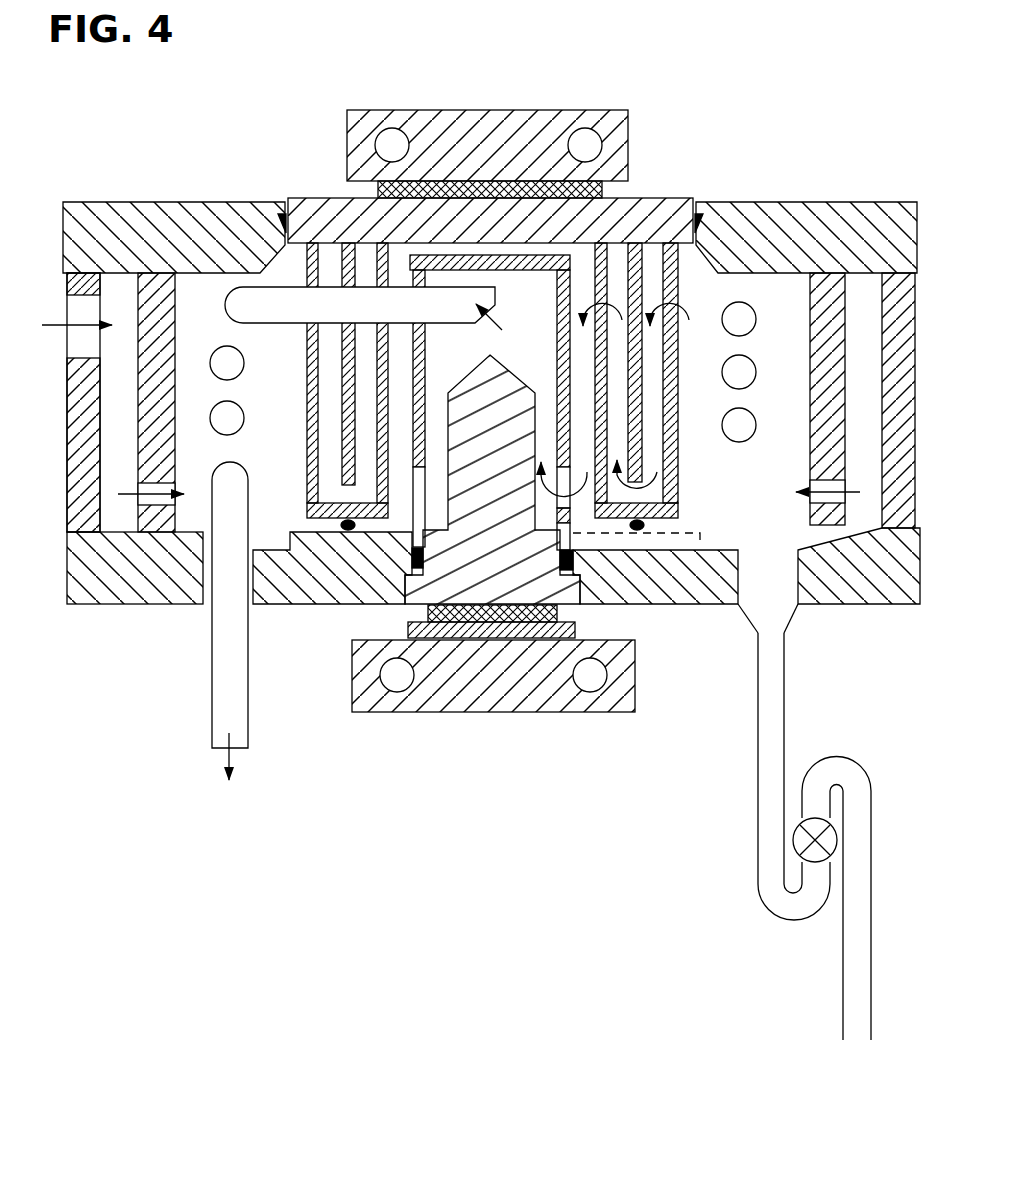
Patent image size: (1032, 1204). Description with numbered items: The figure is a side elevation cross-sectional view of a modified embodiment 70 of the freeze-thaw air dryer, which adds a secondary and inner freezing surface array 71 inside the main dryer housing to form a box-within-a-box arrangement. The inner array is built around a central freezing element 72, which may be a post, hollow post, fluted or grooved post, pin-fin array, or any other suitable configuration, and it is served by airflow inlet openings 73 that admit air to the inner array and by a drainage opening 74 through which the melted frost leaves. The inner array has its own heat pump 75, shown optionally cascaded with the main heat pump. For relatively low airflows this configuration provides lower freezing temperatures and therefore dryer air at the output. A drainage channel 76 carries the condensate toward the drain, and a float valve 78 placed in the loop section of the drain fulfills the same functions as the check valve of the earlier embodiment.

The modified embodiment of the freeze-thaw air dryer 70 is at (113, 885).
The secondary and inner freezing surface array 71 is at (433, 377).
The central freezing element 72 is at (505, 363).
The airflow inlet openings 73 is at (413, 497).
The drainage opening 74 is at (583, 527).
The heat pump 75 is at (392, 620).
The drainage channel 76 is at (680, 540).
The float valve 78 is at (793, 832).